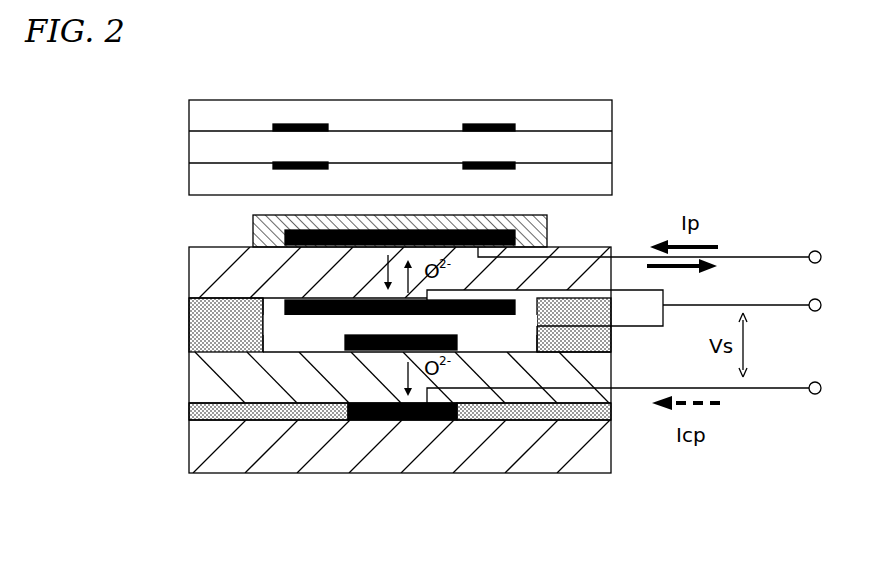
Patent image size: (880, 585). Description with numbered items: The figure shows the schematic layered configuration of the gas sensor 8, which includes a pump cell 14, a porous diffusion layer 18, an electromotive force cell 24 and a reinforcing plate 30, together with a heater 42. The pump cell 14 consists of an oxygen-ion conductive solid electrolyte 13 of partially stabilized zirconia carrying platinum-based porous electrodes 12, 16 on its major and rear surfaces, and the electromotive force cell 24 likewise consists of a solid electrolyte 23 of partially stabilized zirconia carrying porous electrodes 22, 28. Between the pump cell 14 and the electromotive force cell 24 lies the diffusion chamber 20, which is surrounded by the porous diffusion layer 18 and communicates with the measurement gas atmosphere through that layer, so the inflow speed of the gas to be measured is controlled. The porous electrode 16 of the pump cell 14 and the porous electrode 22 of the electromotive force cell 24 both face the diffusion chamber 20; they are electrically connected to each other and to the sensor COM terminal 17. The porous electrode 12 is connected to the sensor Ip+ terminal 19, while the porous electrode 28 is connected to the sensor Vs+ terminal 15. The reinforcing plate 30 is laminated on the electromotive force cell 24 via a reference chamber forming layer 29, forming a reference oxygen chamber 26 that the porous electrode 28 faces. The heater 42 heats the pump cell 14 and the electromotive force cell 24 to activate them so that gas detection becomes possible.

The gas sensor 8 is at (533, 517).
The porous electrode 12 is at (318, 246).
The solid electrolyte 13 is at (208, 265).
The pump cell 14 is at (451, 271).
The sensor Vs+ terminal 15 is at (815, 394).
The porous electrode 16 is at (315, 298).
The sensor COM terminal 17 is at (815, 311).
The porous diffusion layer 18 is at (213, 313).
The sensor Ip+ terminal 19 is at (815, 251).
The diffusion chamber 20 is at (275, 328).
The porous electrode 22 is at (345, 342).
The solid electrolyte 23 is at (205, 385).
The electromotive force cell 24 is at (350, 380).
The reference oxygen chamber 26 is at (463, 420).
The porous electrode 28 is at (241, 407).
The reference chamber forming layer 29 is at (607, 412).
The reinforcing plate 30 is at (190, 452).
The heater 42 is at (242, 100).